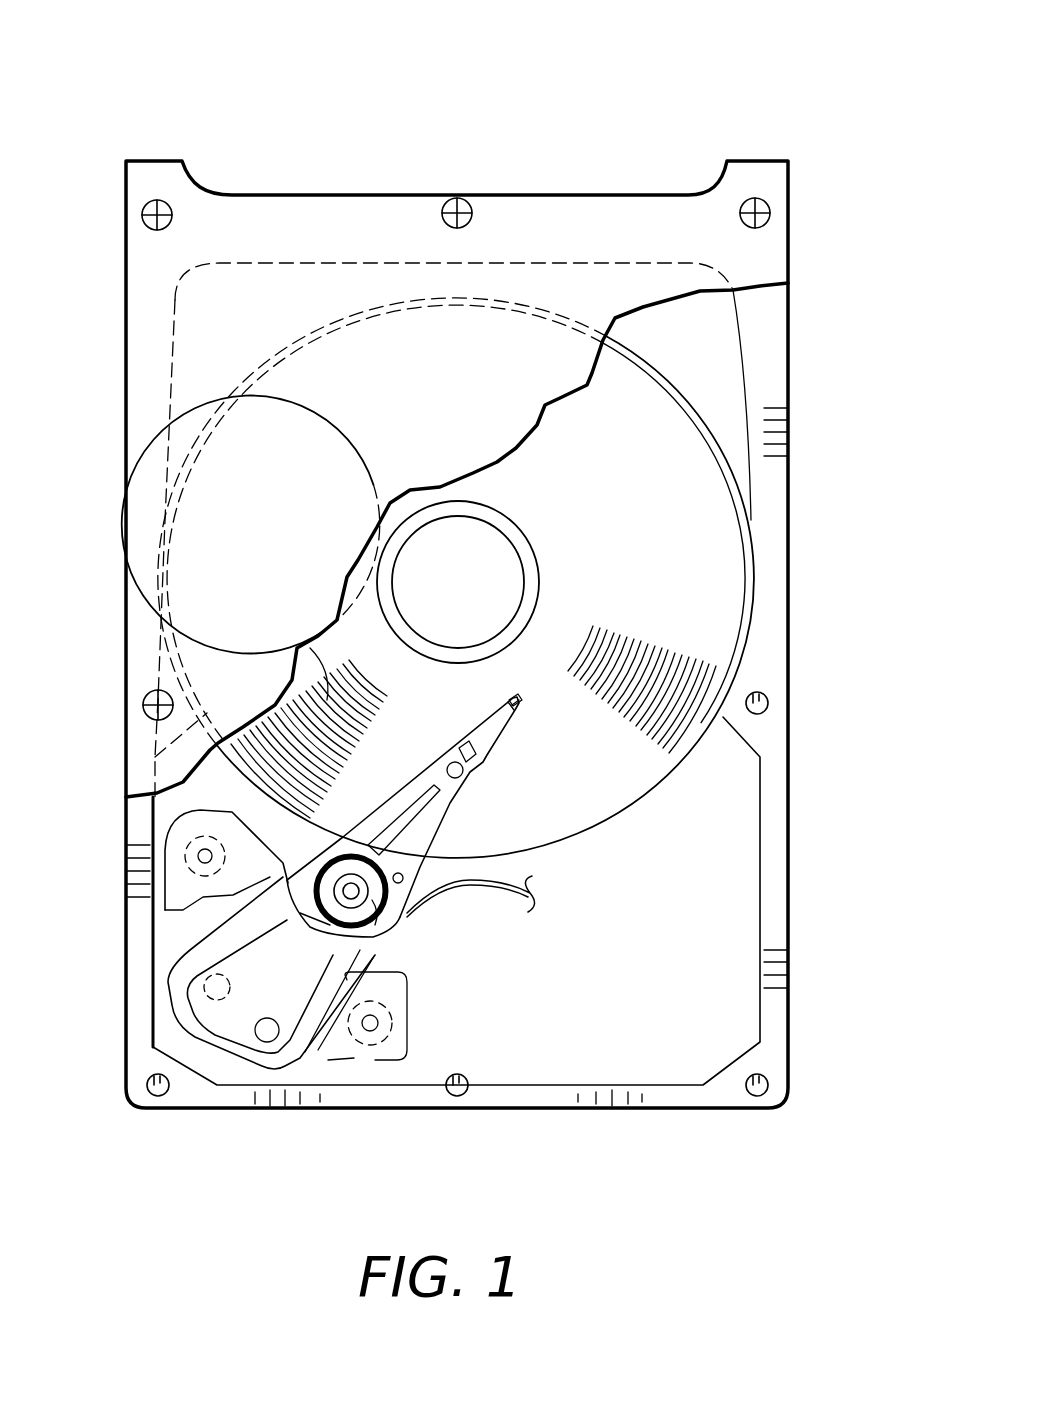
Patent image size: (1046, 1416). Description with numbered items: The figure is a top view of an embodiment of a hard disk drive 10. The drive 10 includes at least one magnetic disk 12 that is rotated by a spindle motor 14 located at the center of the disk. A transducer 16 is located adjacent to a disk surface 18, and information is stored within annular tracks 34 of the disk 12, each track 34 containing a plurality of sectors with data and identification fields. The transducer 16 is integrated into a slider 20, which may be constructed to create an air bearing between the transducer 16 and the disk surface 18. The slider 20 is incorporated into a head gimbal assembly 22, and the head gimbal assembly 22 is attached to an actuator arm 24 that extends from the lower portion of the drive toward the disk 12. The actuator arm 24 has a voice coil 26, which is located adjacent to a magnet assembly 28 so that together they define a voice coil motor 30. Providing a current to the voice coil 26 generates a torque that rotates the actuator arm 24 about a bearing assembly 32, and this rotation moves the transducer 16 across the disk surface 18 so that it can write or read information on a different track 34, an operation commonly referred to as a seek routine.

The hard disk drive 10 is at (692, 85).
The magnetic disk 12 is at (700, 538).
The spindle motor 14 is at (443, 540).
The transducer 16 is at (520, 698).
The disk surface 18 is at (684, 601).
The slider 20 is at (518, 708).
The head gimbal assembly 22 is at (527, 708).
The actuator arm 24 is at (458, 802).
The voice coil 26 is at (197, 980).
The magnet assembly 28 is at (193, 928).
The voice coil motor 30 is at (316, 1030).
The bearing assembly 32 is at (367, 897).
The annular tracks 34 is at (288, 730).